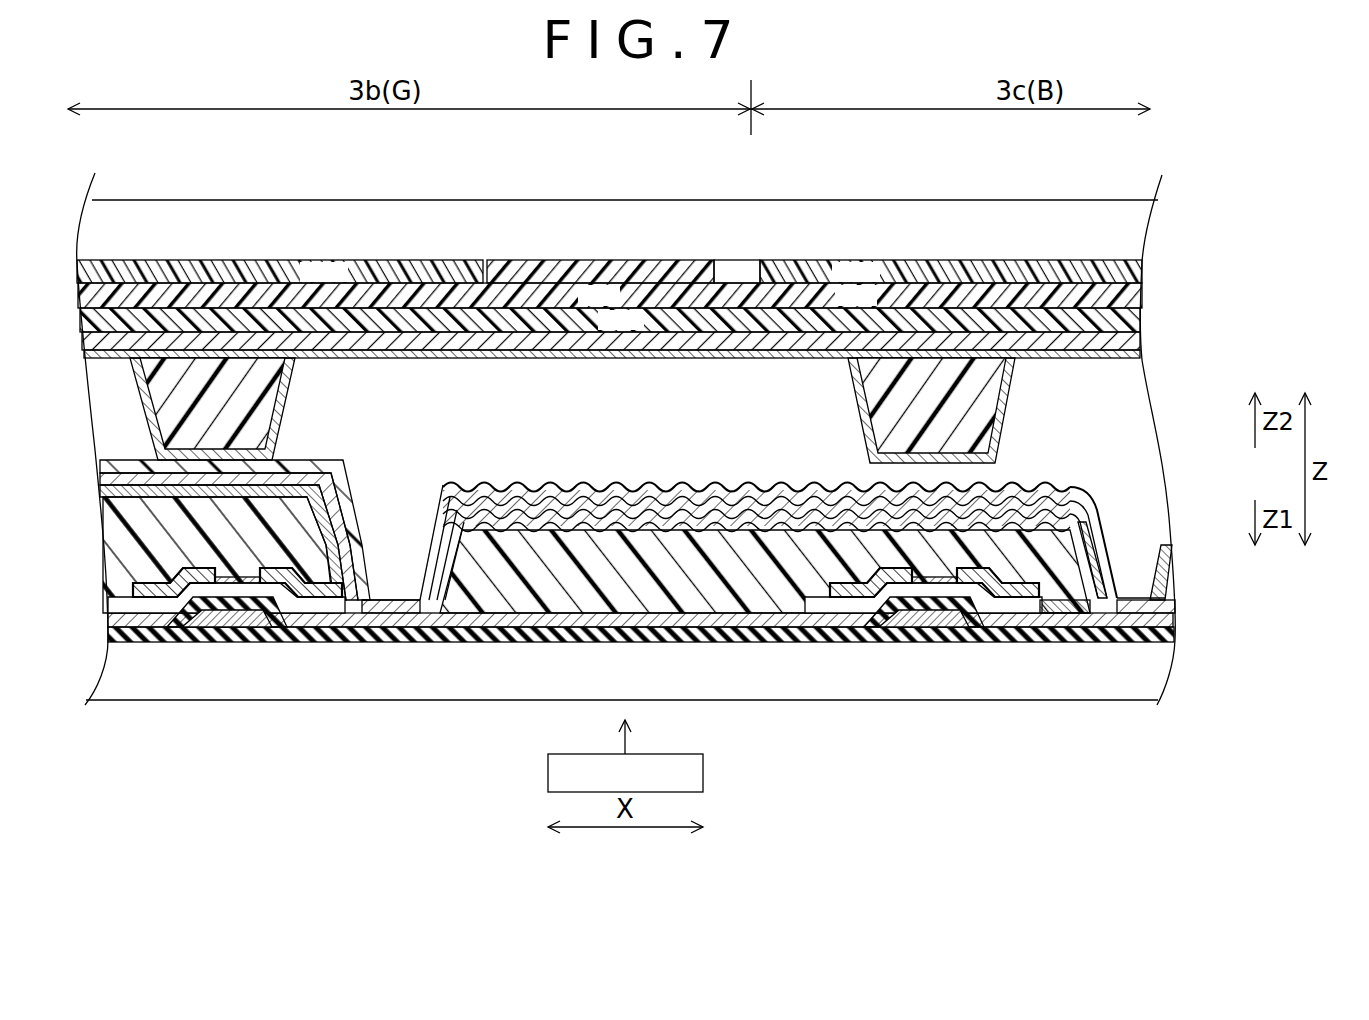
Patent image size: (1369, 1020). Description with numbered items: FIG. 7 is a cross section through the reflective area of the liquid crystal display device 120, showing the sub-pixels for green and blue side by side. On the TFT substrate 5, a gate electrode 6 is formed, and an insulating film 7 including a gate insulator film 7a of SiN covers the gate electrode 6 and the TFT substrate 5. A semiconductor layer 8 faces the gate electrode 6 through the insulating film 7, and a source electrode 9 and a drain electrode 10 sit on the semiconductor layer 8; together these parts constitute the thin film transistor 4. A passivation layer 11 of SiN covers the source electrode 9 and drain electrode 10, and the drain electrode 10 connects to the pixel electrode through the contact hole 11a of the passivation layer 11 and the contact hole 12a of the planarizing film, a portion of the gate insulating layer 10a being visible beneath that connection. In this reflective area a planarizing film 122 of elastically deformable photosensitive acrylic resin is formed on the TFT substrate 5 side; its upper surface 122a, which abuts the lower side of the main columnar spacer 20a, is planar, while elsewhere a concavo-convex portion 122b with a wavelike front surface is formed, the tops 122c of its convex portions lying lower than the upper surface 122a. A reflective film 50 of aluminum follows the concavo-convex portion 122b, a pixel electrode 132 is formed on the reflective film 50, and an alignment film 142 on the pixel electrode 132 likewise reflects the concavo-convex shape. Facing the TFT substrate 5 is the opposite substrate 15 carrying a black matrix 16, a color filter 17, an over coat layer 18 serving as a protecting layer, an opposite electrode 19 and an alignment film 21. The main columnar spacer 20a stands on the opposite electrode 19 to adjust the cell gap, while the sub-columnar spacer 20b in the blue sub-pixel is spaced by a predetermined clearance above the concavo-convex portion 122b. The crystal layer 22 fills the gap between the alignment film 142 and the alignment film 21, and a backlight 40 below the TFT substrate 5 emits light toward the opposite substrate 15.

The liquid crystal display device 120 is at (1170, 152).
The opposite substrate 15 is at (1125, 237).
The black matrix 16 is at (1130, 272).
The color filter 17 is at (1128, 296).
The over coat layer 18 is at (1128, 320).
The opposite electrode 19 is at (1128, 343).
The alignment film 21 is at (1130, 357).
The main columnar spacer 20a is at (210, 385).
The sub-columnar spacer 20b is at (940, 380).
The crystal layer 22 is at (1135, 425).
The TFT substrate 5 is at (1160, 672).
The insulating film 7 is at (1165, 634).
The drain electrode 10 is at (1165, 618).
The gate insulating layer portion 10a is at (403, 640).
The thin film transistor 4 is at (290, 540).
The upper surface of the planarizing film 122a is at (251, 481).
The contact hole 12a is at (333, 505).
The contact hole 11a is at (372, 590).
The planarizing film 122 is at (118, 643).
The concavo-convex portion 122b is at (1048, 490).
The tops of convex portions 122c is at (845, 520).
The reflective film 50 is at (515, 487).
The pixel electrode 132 is at (612, 512).
The alignment film 142 is at (1163, 585).
The source electrode 9 is at (160, 640).
The gate insulator film 7a is at (237, 633).
The gate electrode 6 is at (268, 633).
The semiconductor layer 8 is at (205, 635).
The passivation layer 11 is at (1050, 607).
The backlight 40 is at (703, 773).